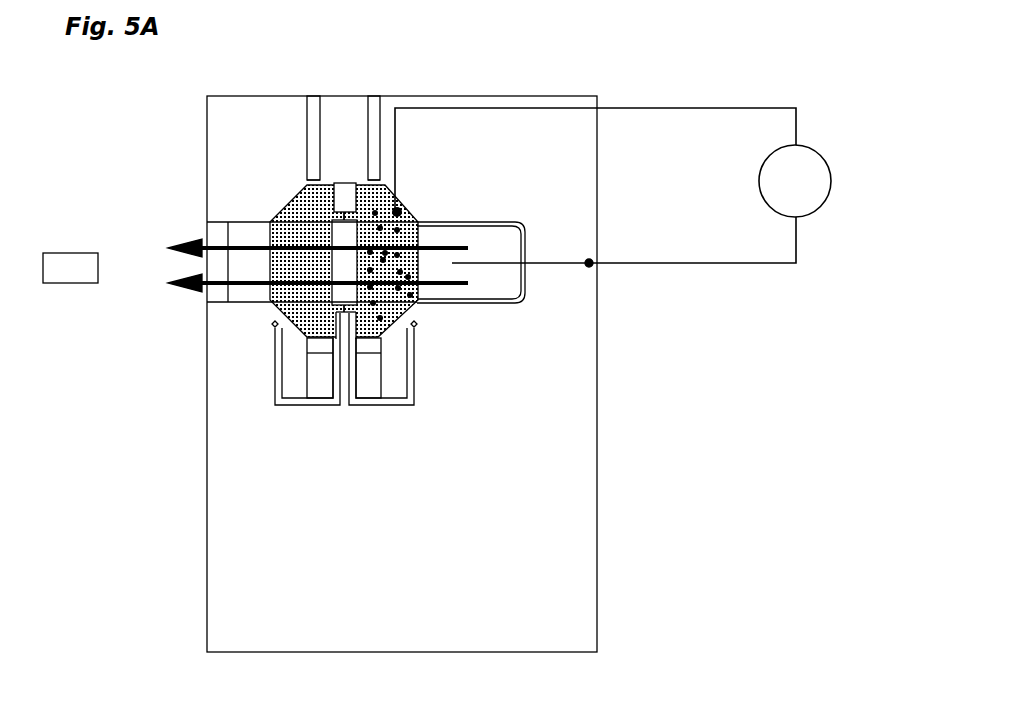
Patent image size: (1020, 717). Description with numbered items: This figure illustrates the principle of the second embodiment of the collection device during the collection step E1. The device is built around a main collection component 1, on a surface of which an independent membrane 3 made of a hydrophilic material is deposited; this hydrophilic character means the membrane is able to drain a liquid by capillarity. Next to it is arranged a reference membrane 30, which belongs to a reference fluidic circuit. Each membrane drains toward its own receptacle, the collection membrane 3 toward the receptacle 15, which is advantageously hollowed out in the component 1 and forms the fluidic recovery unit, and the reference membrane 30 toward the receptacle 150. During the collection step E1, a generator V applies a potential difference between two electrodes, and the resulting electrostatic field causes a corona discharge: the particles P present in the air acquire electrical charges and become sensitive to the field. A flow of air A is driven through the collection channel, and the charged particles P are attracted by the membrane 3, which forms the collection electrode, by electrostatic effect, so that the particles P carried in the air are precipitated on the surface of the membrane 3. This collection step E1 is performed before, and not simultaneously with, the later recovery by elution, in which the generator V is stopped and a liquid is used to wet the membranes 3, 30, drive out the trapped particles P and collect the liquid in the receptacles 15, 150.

The main collection component 1 is at (597, 428).
The membrane 3 is at (380, 200).
The reference membrane 30 is at (296, 240).
The particles P is at (380, 318).
The receptacle 150 is at (323, 387).
The receptacle 15 is at (368, 387).
The generator V is at (613, 185).
The flow of air A is at (303, 265).
The collection step E1 is at (70, 268).